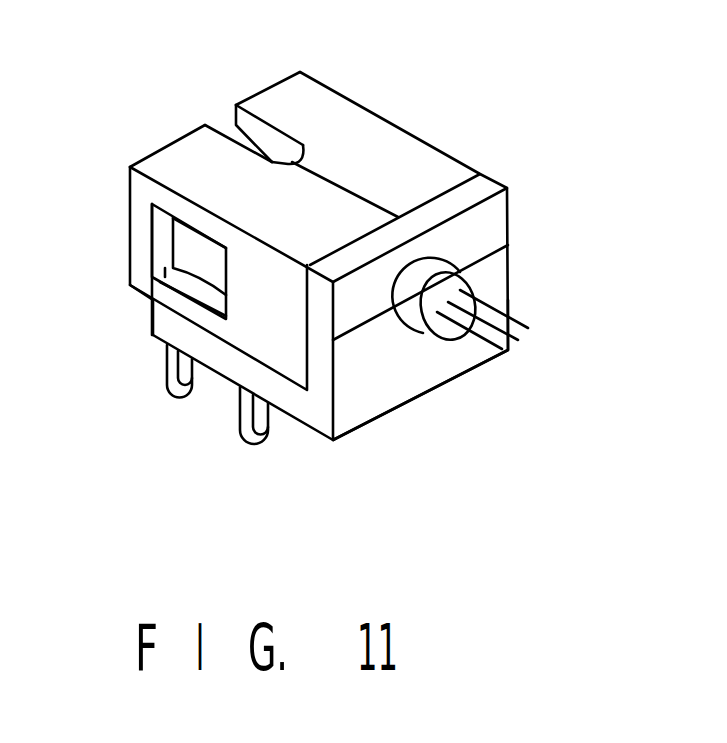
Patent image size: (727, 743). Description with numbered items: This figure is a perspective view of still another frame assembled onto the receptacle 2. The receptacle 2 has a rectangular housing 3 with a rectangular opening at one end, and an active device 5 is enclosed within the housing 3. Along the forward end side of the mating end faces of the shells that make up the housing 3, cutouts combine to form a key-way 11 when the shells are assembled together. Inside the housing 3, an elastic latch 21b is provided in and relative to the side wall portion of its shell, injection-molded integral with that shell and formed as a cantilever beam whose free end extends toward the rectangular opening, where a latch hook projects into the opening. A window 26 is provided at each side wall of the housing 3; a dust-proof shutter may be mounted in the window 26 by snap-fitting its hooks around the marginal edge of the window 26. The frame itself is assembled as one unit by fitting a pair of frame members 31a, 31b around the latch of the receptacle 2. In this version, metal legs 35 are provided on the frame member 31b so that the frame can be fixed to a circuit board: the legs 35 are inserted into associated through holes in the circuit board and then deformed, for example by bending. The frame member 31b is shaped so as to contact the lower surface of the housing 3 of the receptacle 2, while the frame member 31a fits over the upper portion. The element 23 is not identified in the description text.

The receptacle 2 is at (410, 113).
The housing 3 is at (173, 163).
The key-way 11 is at (222, 117).
The frame member 31a is at (492, 217).
The frame member 31b is at (428, 378).
The elastic latch 21b is at (183, 242).
The active device 5 is at (432, 267).
The window 26 is at (152, 302).
The bottom edge 23 is at (307, 430).
The legs 35 is at (240, 435).